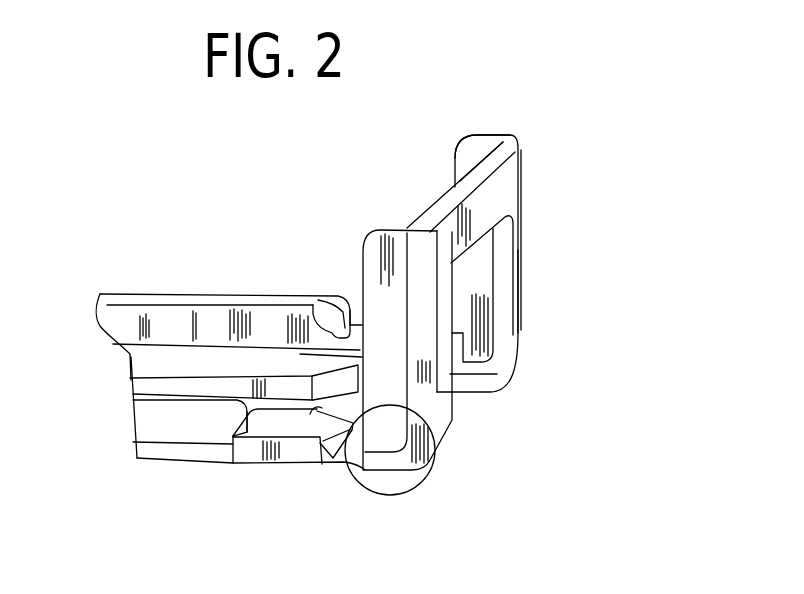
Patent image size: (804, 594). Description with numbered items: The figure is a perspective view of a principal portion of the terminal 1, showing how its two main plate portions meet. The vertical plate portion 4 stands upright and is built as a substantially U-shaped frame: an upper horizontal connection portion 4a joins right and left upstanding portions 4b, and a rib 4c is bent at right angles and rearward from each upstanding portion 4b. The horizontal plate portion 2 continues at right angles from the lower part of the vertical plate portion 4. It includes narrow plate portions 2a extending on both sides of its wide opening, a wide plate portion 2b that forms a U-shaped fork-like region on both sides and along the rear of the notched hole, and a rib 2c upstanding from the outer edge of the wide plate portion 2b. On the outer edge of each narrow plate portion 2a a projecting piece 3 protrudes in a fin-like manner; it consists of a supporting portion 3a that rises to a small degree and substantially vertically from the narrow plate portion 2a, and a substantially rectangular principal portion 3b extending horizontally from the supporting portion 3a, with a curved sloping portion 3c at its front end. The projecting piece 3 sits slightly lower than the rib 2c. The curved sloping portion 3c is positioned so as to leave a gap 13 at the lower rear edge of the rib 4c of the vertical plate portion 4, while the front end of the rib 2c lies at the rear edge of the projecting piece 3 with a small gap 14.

The terminal 1 is at (678, 236).
The horizontal plate portion 2 is at (170, 458).
The narrow plate portions 2a is at (233, 367).
The wide plate portion 2b is at (130, 360).
The rib 2c is at (310, 302).
The projecting piece 3 is at (346, 299).
The supporting portion 3a is at (311, 297).
The principal portion 3b is at (327, 460).
The curved sloping portion 3c is at (353, 447).
The vertical plate portion 4 is at (520, 240).
The upper horizontal connection portion 4a is at (478, 213).
The upstanding portions 4b is at (521, 286).
The ribs 4c is at (455, 168).
The gap 13 is at (436, 448).
The small gap 14 is at (248, 443).